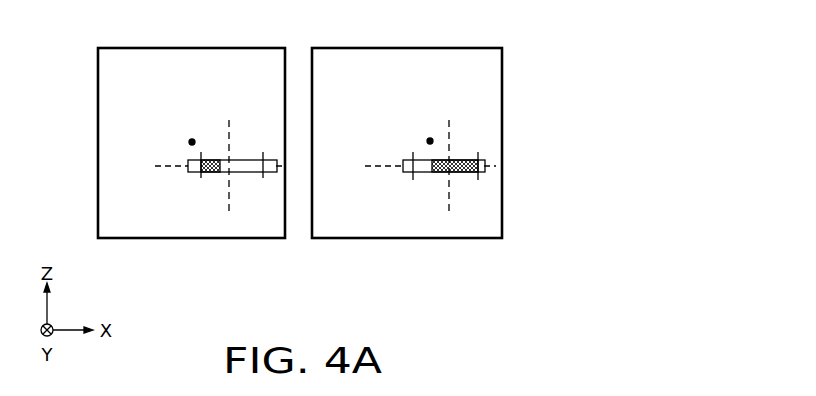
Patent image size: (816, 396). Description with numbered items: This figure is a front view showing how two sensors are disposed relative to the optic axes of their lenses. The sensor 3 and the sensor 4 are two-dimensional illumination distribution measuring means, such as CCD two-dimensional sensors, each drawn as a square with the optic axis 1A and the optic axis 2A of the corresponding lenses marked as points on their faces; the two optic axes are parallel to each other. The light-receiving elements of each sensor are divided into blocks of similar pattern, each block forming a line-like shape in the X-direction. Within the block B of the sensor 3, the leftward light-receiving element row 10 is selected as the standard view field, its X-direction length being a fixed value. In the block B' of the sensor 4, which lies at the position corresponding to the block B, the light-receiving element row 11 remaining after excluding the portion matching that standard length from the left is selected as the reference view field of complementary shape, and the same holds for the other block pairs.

The sensor 3 is at (202, 47).
The sensor 4 is at (415, 47).
The optic axis 1A is at (189, 140).
The optic axis 2A is at (427, 139).
The block B is at (197, 109).
The block B' is at (468, 117).
The light-receiving element row 10 is at (212, 172).
The light-receiving element row 11 is at (461, 172).